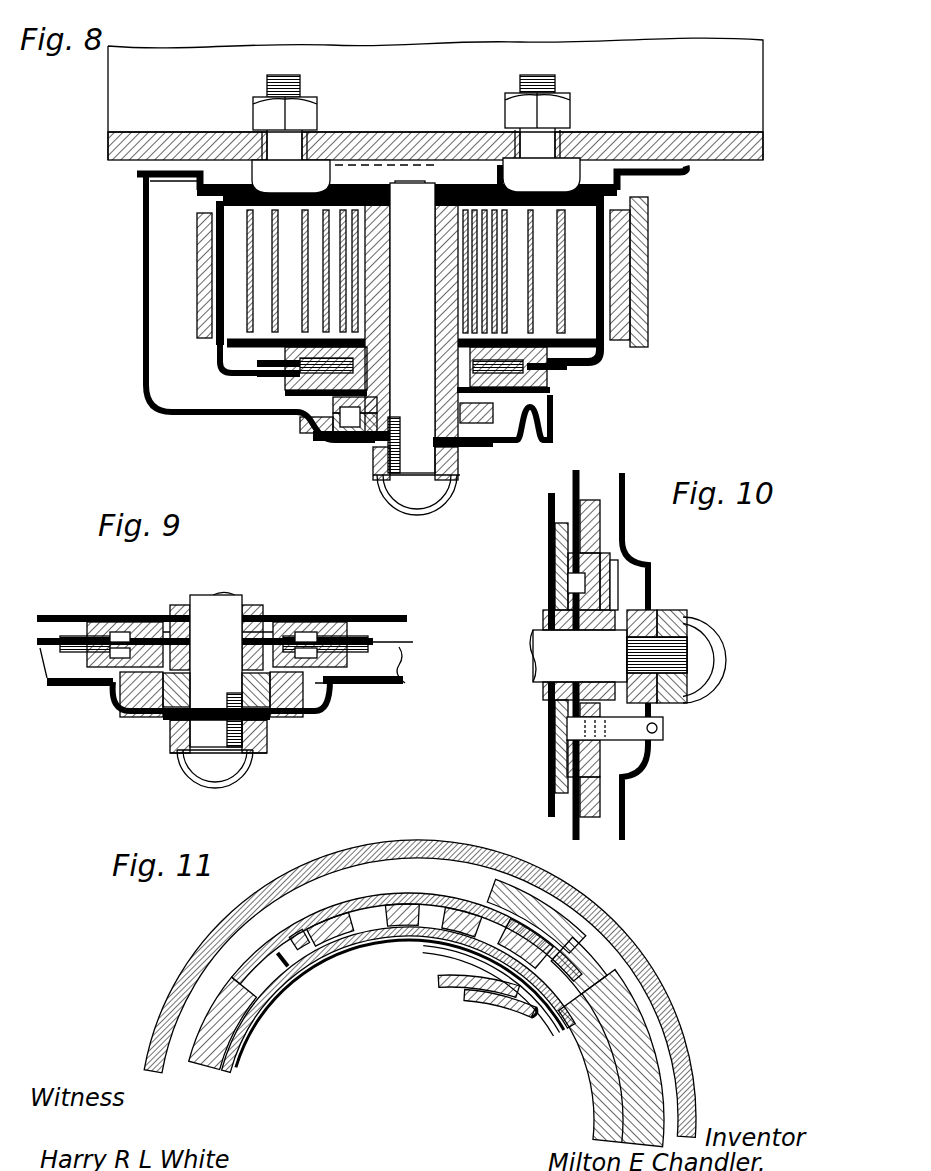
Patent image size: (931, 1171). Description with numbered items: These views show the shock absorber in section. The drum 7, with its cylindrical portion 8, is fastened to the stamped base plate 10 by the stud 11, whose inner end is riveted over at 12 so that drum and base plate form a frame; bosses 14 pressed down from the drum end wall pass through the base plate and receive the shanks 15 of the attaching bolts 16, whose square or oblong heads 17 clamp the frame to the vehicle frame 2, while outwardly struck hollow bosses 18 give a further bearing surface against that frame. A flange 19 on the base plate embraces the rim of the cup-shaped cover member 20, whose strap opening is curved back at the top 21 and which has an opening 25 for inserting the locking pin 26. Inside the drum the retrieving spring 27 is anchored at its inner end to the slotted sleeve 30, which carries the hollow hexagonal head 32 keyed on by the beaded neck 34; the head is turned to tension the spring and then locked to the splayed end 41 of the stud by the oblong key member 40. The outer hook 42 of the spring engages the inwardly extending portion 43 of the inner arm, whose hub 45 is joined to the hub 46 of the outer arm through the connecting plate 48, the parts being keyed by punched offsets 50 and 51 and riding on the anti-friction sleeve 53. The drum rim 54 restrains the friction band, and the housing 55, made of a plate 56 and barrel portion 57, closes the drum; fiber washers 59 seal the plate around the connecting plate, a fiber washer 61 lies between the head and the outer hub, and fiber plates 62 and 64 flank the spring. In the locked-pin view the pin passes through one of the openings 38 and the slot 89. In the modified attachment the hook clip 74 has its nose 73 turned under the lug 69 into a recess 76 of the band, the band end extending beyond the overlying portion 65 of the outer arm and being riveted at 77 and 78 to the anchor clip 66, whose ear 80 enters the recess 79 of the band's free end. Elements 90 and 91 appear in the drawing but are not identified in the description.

In FIG. 8, the vehicle frame 2 is at (690, 138).
In FIG. 8, the drum 7 is at (200, 410).
In FIG. 11, the cylindrical portion 8 is at (298, 977).
In FIG. 8, the base plate 10 is at (655, 176).
In FIG. 8, the stud 11 is at (411, 328).
In FIG. 9, the stud 11 is at (232, 622).
In FIG. 10, the stud 11 is at (535, 682).
In FIG. 8, the riveted end 12 is at (415, 165).
In FIG. 8, the bosses 14 is at (333, 166).
In FIG. 8, the shanks 15 is at (263, 145).
In FIG. 8, the attaching bolts 16 is at (283, 75).
In FIG. 8, the heads 17 is at (235, 140).
In FIG. 8, the hollow bosses 18 is at (380, 165).
In FIG. 8, the flange 19 is at (148, 188).
In FIG. 8, the cover member 20 is at (220, 342).
In FIG. 8, the curved-back top edge 21 is at (537, 442).
In FIG. 10, the opening 25 is at (650, 742).
In FIG. 10, the locking pin 26 is at (665, 735).
In FIG. 8, the retrieving spring 27 is at (240, 258).
In FIG. 11, the retrieving spring 27 is at (458, 994).
In FIG. 8, the sleeve 30 is at (378, 305).
In FIG. 9, the sleeve 30 is at (180, 605).
In FIG. 10, the sleeve 30 is at (548, 620).
In FIG. 8, the hollow hexagonal head 32 is at (508, 415).
In FIG. 10, the hollow hexagonal head 32 is at (612, 567).
In FIG. 8, the beaded neck 34 is at (378, 478).
In FIG. 10, the openings 38 is at (614, 587).
In FIG. 8, the key member 40 is at (362, 452).
In FIG. 9, the key member 40 is at (265, 720).
In FIG. 10, the key member 40 is at (648, 612).
In FIG. 8, the splayed end 41 is at (445, 492).
In FIG. 9, the splayed end 41 is at (200, 734).
In FIG. 10, the splayed end 41 is at (690, 667).
In FIG. 11, the hook 42 is at (525, 1024).
In FIG. 11, the inwardly extending portion 43 is at (495, 1012).
In FIG. 8, the hub 45 is at (262, 365).
In FIG. 9, the hub 45 is at (350, 640).
In FIG. 8, the hub 46 is at (548, 392).
In FIG. 9, the hub 46 is at (330, 682).
In FIG. 10, the hub 46 is at (600, 525).
In FIG. 8, the connecting plate 48 is at (320, 392).
In FIG. 9, the connecting plate 48 is at (322, 624).
In FIG. 9, the offsets 50 is at (130, 625).
In FIG. 10, the offsets 50 is at (603, 806).
In FIG. 9, the offsets 51 is at (108, 692).
In FIG. 8, the anti-friction sleeve 53 is at (330, 434).
In FIG. 8, the flange 54 is at (170, 394).
In FIG. 8, the housing 55 is at (650, 288).
In FIG. 11, the housing 55 is at (235, 1017).
In FIG. 8, the plate 56 is at (592, 372).
In FIG. 9, the plate 56 is at (45, 615).
In FIG. 10, the plate 56 is at (583, 490).
In FIG. 8, the barrel portion 57 is at (600, 280).
In FIG. 11, the barrel portion 57 is at (346, 964).
In FIG. 8, the fiber washers 59 is at (300, 364).
In FIG. 9, the fiber washers 59 is at (368, 640).
In FIG. 10, the fiber washers 59 is at (590, 502).
In FIG. 8, the fiber washer 61 is at (300, 427).
In FIG. 9, the fiber washer 61 is at (140, 702).
In FIG. 10, the fiber washer 61 is at (620, 550).
In FIG. 8, the fiber plate 62 is at (227, 343).
In FIG. 10, the fiber plate 62 is at (549, 772).
In FIG. 8, the fiber plate 64 is at (592, 163).
In FIG. 11, the overlying portion 65 is at (555, 942).
In FIG. 11, the anchor clip 66 is at (380, 893).
In FIG. 11, the lug 69 is at (500, 878).
In FIG. 11, the nose 73 is at (440, 954).
In FIG. 11, the hook clip 74 is at (578, 908).
In FIG. 11, the recess 76 is at (468, 906).
In FIG. 11, the rivet 77 is at (426, 905).
In FIG. 11, the rivet 78 is at (618, 950).
In FIG. 11, the recess 79 is at (280, 955).
In FIG. 11, the ear 80 is at (300, 935).
In FIG. 10, the slot 89 is at (610, 762).
In FIG. 8, the lock nut 90 is at (365, 442).
In FIG. 10, the lock nut 90 is at (688, 617).
In FIG. 8, the cap 91 is at (395, 508).
In FIG. 9, the cap 91 is at (198, 769).
In FIG. 10, the cap 91 is at (716, 642).